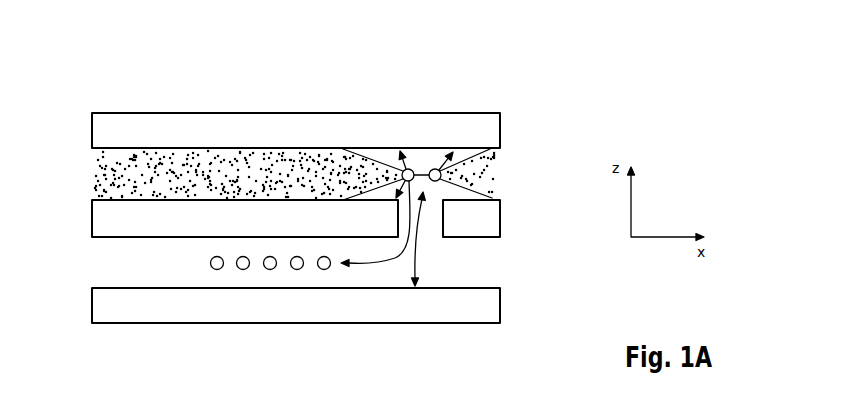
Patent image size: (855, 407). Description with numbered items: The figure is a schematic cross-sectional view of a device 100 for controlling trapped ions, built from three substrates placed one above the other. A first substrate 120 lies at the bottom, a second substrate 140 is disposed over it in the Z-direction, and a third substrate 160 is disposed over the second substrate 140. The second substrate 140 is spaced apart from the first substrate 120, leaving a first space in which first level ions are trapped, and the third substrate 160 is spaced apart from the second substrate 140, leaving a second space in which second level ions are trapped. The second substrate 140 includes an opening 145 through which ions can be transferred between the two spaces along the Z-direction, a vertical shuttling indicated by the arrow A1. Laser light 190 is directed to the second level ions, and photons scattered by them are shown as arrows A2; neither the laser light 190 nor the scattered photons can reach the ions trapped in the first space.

The device for controlling trapped ions 100 is at (512, 53).
The first substrate 120 is at (100, 303).
The second substrate 140 is at (102, 218).
The opening 145 is at (432, 222).
The third substrate 160 is at (107, 133).
The laser light 190 is at (100, 172).
The arrow A1 is at (383, 261).
The arrows A2 is at (410, 216).